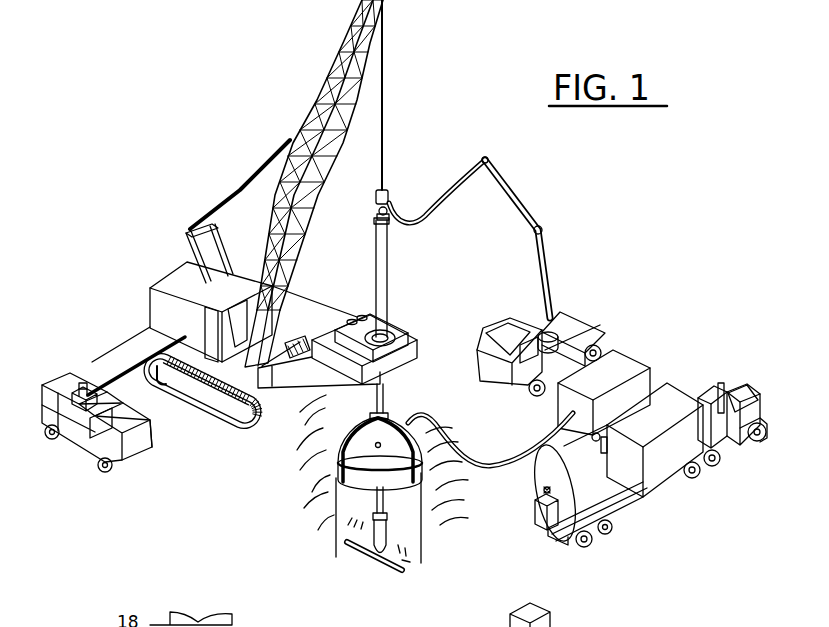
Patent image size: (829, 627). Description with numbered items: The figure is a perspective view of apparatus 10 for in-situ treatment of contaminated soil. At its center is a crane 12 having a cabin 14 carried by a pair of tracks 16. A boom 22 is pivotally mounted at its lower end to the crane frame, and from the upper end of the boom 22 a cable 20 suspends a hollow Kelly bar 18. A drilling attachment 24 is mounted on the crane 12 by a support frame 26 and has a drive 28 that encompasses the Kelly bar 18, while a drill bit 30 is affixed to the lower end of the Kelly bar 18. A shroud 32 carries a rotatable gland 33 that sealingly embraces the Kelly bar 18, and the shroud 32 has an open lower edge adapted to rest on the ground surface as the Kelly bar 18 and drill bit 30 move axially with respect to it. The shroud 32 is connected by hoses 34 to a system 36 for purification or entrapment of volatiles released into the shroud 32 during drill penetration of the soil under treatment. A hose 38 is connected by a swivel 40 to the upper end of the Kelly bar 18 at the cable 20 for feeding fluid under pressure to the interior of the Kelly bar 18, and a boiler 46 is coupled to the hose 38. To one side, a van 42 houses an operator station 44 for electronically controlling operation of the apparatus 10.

The apparatus 10 is at (472, 51).
The crane 12 is at (152, 291).
The cabin 14 is at (176, 277).
The tracks 16 is at (254, 432).
The Kelly bar 18 is at (389, 257).
The cable 20 is at (384, 88).
The boom 22 is at (342, 52).
The drilling attachment 24 is at (412, 333).
The support frame 26 is at (317, 397).
The drive 28 is at (395, 327).
The drill bit 30 is at (370, 564).
The shroud 32 is at (336, 466).
The hoses 34 is at (497, 462).
The system for purification or entrapment of volatiles 36 is at (628, 356).
The hose 38 is at (408, 213).
The swivel 40 is at (384, 193).
The van 42 is at (67, 378).
The operator station 44 is at (78, 422).
The boiler 46 is at (614, 497).
The rotatable gland 33 is at (589, 626).